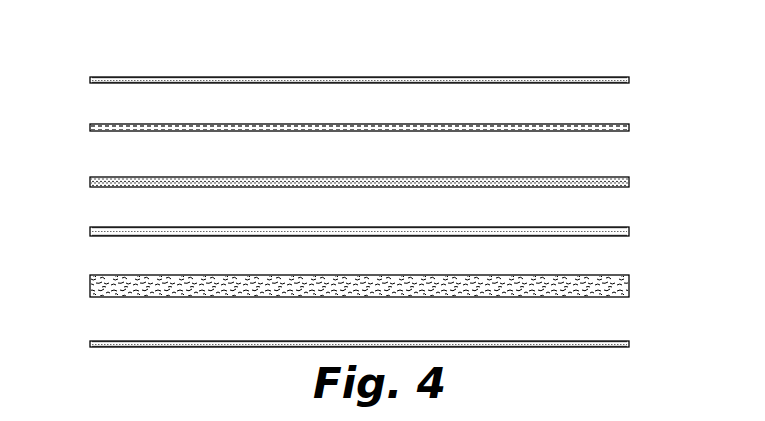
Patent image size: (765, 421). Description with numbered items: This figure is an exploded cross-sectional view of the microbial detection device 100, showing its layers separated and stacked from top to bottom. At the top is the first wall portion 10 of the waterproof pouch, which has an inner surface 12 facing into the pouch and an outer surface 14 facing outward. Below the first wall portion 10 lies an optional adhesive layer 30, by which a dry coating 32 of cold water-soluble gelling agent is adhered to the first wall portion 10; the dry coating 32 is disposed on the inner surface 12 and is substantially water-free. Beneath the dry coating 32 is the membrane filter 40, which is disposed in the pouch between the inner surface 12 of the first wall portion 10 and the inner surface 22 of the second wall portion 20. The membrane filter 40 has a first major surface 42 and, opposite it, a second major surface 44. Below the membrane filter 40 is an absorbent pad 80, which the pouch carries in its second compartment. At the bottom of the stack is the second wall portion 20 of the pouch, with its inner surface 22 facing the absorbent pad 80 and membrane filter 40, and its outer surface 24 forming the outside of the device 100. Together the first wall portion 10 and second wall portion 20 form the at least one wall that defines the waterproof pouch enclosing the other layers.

The device 100 is at (632, 28).
The first wall portion 10 is at (631, 80).
The inner surface 12 is at (103, 84).
The outer surface 14 is at (132, 77).
The adhesive layer 30 is at (630, 128).
The dry coating 32 is at (630, 181).
The membrane filter 40 is at (630, 232).
The first major surface 42 is at (101, 227).
The second major surface 44 is at (101, 237).
The absorbent pad 80 is at (630, 285).
The second wall portion 20 is at (632, 343).
The inner surface 22 is at (103, 340).
The outer surface 24 is at (103, 348).